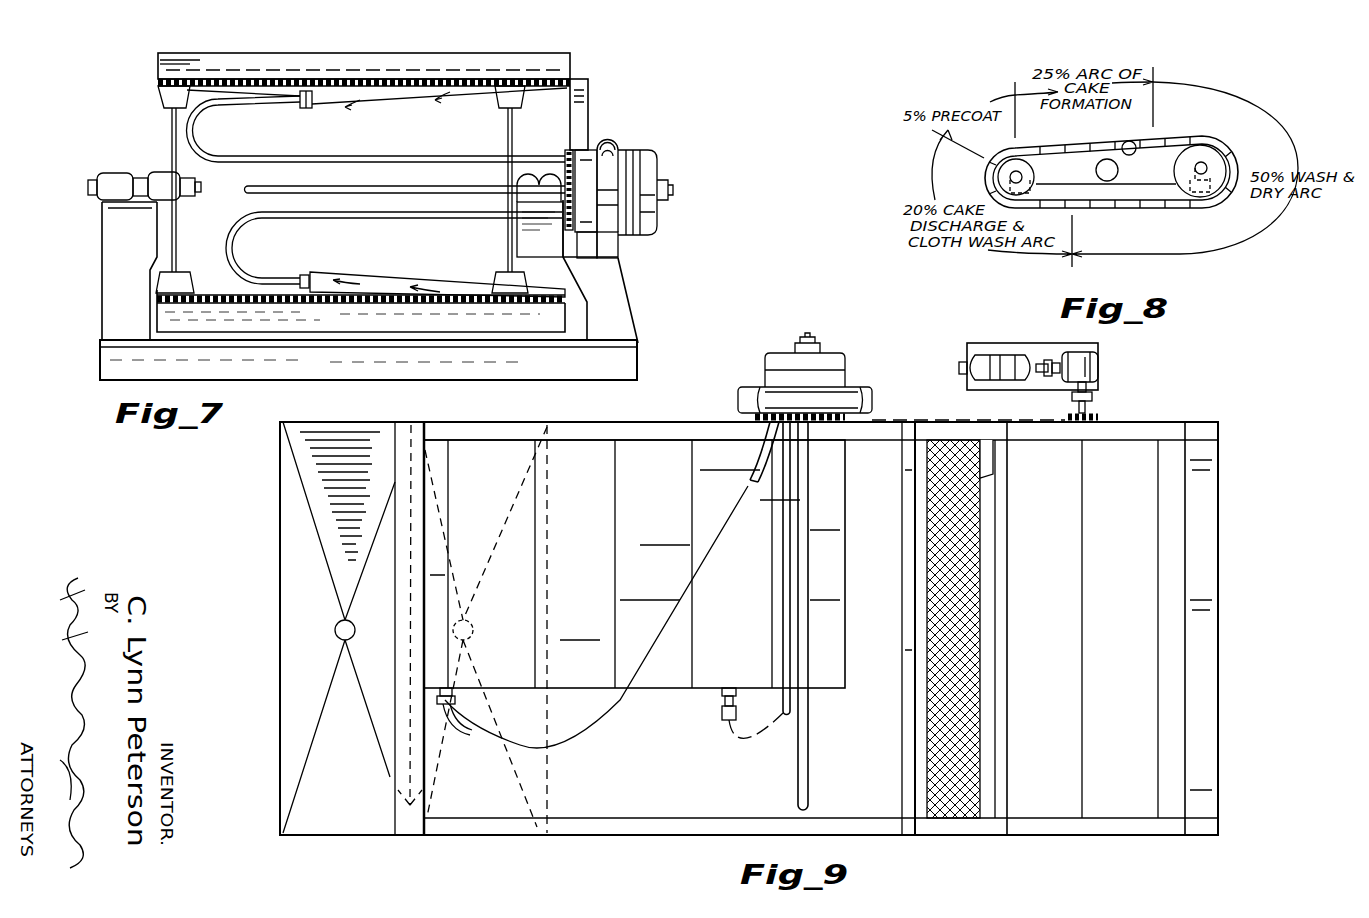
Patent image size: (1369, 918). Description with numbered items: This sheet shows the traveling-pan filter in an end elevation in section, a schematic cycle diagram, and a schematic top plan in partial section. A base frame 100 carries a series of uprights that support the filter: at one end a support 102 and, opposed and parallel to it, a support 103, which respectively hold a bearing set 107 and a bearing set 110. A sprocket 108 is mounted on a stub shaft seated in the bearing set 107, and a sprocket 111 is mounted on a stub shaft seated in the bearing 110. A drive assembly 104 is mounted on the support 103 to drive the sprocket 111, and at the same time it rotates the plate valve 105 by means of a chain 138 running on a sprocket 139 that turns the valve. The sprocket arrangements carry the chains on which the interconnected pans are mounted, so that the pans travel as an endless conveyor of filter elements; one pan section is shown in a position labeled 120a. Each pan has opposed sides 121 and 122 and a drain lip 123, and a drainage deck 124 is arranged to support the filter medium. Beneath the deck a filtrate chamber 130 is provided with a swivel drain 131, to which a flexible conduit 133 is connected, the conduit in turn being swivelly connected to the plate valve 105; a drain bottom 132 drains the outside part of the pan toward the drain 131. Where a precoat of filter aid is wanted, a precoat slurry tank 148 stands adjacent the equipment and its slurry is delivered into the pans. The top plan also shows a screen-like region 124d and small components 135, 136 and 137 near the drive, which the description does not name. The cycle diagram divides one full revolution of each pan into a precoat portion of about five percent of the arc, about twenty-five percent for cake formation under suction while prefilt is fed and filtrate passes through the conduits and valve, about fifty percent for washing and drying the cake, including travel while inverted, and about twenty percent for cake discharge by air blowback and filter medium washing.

In FIG. 7, the base frame 100 is at (493, 372).
In FIG. 7, the support 102 is at (105, 285).
In FIG. 7, the support 103 is at (620, 302).
In FIG. 9, the drive assembly 104 is at (1069, 349).
In FIG. 7, the plate valve 105 is at (645, 226).
In FIG. 9, the plate valve 105 is at (838, 360).
In FIG. 7, the bearing set 107 is at (160, 175).
In FIG. 7, the sprocket 108 is at (177, 222).
In FIG. 7, the bearing set 110 is at (535, 180).
In FIG. 7, the sprocket 111 is at (507, 242).
In FIG. 7, the pan position 120a is at (560, 68).
In FIG. 7, the side 121 is at (572, 55).
In FIG. 7, the side 122 is at (158, 62).
In FIG. 7, the drain lip 123 is at (282, 72).
In FIG. 7, the drainage deck 124 is at (388, 78).
In FIG. 9, the filter mesh 124d is at (985, 560).
In FIG. 7, the filtrate chamber 130 is at (444, 100).
In FIG. 9, the filtrate chamber 130 is at (754, 590).
In FIG. 7, the swivel drain 131 is at (310, 104).
In FIG. 7, the drain bottom 132 is at (300, 98).
In FIG. 7, the flexible conduit 133 is at (212, 155).
In FIG. 9, the flexible conduit 133 is at (720, 712).
In FIG. 9, the reservoir 135 is at (988, 355).
In FIG. 9, the pump motor 136 is at (1100, 355).
In FIG. 9, the valve 137 is at (1100, 414).
In FIG. 9, the chain 138 is at (936, 420).
In FIG. 7, the sprocket 139 is at (578, 150).
In FIG. 9, the sprocket 139 is at (755, 418).
In FIG. 9, the precoat slurry tank 148 is at (283, 570).